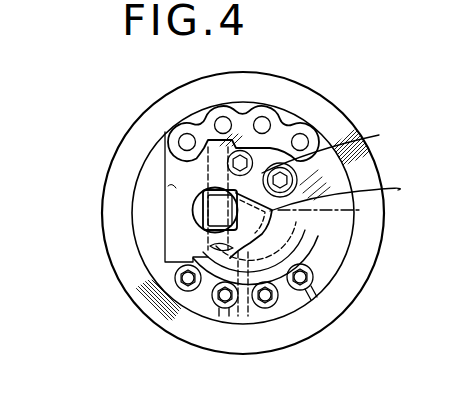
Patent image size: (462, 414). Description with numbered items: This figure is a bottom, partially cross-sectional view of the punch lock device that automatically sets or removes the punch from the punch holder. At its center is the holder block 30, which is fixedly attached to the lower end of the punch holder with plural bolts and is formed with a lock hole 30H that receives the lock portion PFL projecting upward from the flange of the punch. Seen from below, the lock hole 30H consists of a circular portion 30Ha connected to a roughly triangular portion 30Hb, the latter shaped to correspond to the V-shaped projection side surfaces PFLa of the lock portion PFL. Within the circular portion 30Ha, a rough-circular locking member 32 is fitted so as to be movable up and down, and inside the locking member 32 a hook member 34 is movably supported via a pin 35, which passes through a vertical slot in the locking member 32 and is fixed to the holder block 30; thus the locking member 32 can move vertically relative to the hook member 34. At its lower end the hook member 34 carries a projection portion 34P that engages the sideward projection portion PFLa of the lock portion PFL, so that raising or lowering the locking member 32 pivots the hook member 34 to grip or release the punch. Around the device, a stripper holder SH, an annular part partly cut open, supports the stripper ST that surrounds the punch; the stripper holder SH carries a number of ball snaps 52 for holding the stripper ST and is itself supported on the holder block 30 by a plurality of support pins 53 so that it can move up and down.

The holder block 30 is at (173, 165).
The lock hole 30H is at (281, 150).
The circular portion 30Ha is at (172, 192).
The roughly triangular portion 30Hb is at (262, 228).
The locking member 32 is at (200, 203).
The hook member 34 is at (200, 220).
The projection portion 34P is at (415, 0).
The pin 35 is at (213, 243).
The lock portion PFL is at (356, 194).
The projection portion PFLa is at (349, 146).
The ball snaps 52 is at (302, 257).
The support pins 53 is at (264, 304).
The stripper holder SH is at (298, 299).
The stripper ST is at (205, 280).